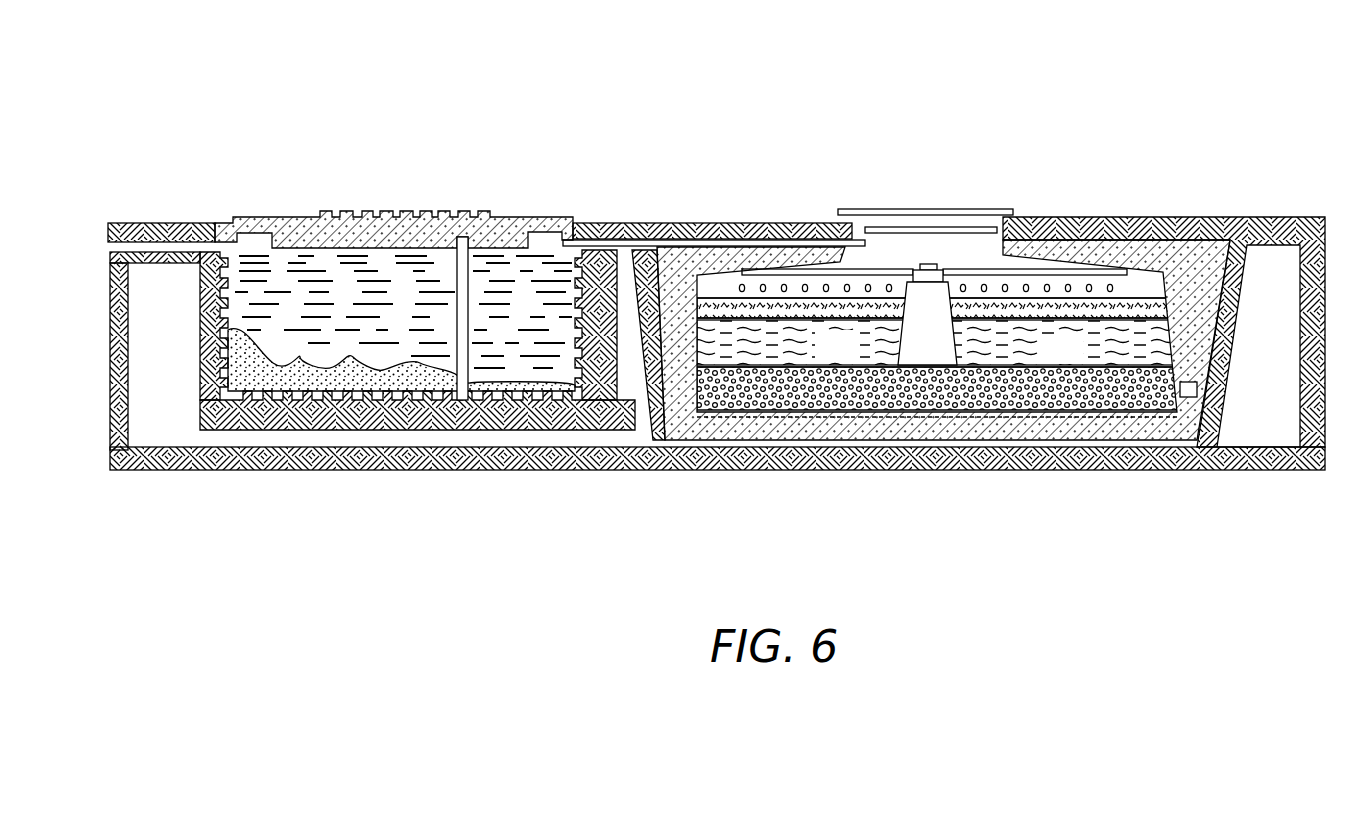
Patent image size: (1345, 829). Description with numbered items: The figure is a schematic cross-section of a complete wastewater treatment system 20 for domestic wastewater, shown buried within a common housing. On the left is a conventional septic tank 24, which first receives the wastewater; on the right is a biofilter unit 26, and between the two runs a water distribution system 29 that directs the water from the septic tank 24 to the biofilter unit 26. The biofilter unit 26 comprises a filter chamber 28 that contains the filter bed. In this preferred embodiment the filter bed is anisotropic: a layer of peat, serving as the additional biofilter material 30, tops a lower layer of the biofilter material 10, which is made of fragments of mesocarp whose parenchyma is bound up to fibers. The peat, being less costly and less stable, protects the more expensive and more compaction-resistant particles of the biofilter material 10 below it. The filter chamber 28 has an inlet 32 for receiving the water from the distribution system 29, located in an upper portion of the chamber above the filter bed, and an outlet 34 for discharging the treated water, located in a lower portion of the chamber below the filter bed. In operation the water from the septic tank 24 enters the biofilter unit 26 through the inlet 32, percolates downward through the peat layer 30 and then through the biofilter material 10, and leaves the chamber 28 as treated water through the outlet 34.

The biofilter material 10 is at (943, 341).
The wastewater treatment system 20 is at (704, 147).
The septic tank 24 is at (390, 201).
The biofilter unit 26 is at (938, 182).
The filter chamber 28 is at (852, 357).
The water distribution system 29 is at (795, 230).
The additional biofilter material 30 is at (706, 300).
The inlet 32 is at (870, 233).
The outlet 34 is at (1191, 396).